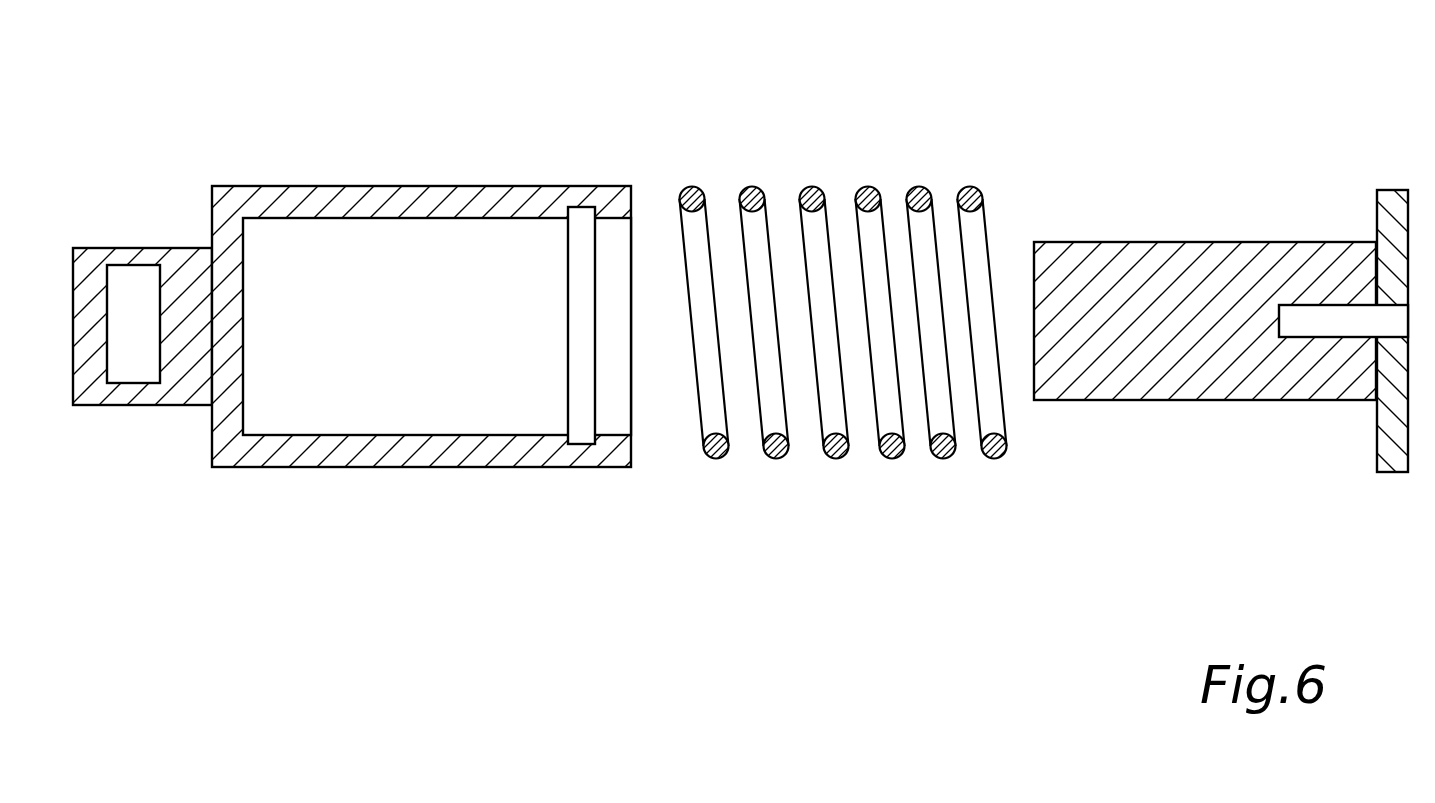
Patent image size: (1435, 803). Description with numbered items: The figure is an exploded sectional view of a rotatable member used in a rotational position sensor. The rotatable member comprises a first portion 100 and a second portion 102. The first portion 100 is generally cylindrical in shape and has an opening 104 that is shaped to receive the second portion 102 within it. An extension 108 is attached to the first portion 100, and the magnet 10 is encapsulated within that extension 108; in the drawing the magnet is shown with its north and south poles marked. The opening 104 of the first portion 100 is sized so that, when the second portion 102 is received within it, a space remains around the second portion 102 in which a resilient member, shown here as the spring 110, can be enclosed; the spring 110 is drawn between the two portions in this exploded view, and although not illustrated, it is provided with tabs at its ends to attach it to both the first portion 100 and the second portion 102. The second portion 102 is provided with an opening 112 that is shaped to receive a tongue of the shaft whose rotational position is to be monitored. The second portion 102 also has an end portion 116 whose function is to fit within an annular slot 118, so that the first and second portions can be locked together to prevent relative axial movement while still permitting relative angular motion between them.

The magnet 10 is at (118, 384).
The first portion 100 is at (298, 192).
The second portion 102 is at (1182, 273).
The opening 104 is at (410, 385).
The extension 108 is at (88, 250).
The spring 110 is at (863, 203).
The opening 112 is at (1330, 320).
The end portion 116 is at (1390, 208).
The annular slot 118 is at (583, 428).